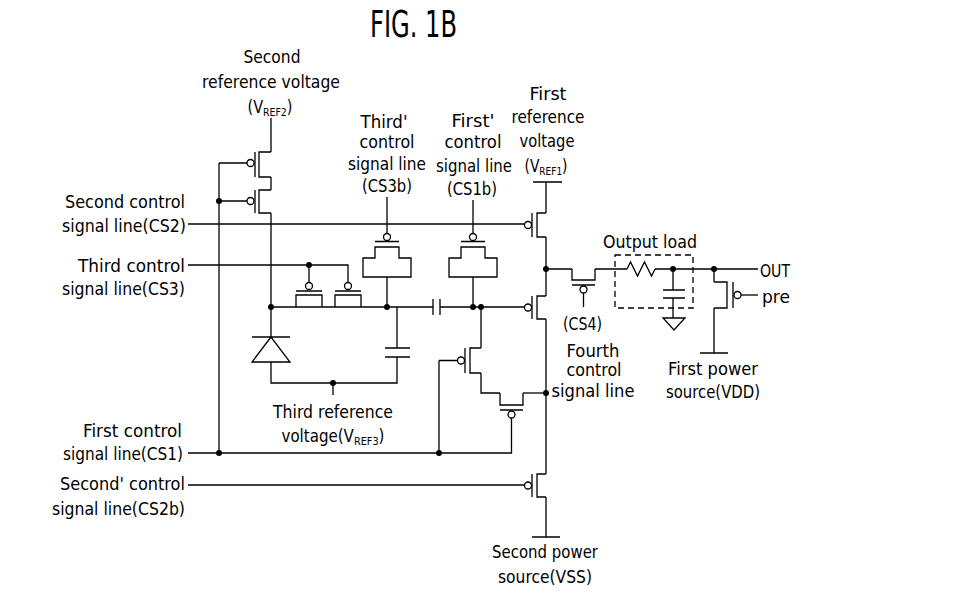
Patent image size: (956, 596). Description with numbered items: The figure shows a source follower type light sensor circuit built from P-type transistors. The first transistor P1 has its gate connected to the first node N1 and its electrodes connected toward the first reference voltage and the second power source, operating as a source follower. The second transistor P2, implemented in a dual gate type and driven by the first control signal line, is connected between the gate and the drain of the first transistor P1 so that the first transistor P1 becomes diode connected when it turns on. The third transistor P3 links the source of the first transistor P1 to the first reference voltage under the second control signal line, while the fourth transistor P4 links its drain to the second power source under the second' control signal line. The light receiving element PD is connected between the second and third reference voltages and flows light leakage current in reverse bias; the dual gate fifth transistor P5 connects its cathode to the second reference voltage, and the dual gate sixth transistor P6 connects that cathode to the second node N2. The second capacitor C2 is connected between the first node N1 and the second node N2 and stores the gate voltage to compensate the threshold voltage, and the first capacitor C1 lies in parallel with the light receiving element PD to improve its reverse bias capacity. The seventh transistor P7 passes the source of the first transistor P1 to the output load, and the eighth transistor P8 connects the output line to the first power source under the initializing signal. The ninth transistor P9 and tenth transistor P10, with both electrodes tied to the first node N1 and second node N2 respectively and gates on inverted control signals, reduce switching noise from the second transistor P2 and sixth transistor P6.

The first transistor P1 is at (546, 307).
The second transistor P2 is at (481, 383).
The third transistor P3 is at (546, 225).
The fourth transistor P4 is at (545, 485).
The fifth transistor P5 is at (254, 182).
The sixth transistor P6 is at (328, 303).
The seventh transistor P7 is at (583, 273).
The eighth transistor P8 is at (722, 295).
The ninth transistor P9 is at (473, 238).
The tenth transistor P10 is at (387, 237).
The light receiving element PD is at (283, 349).
The first capacitor C1 is at (387, 353).
The second capacitor C2 is at (439, 319).
The first node N1 is at (487, 298).
The second node N2 is at (400, 298).